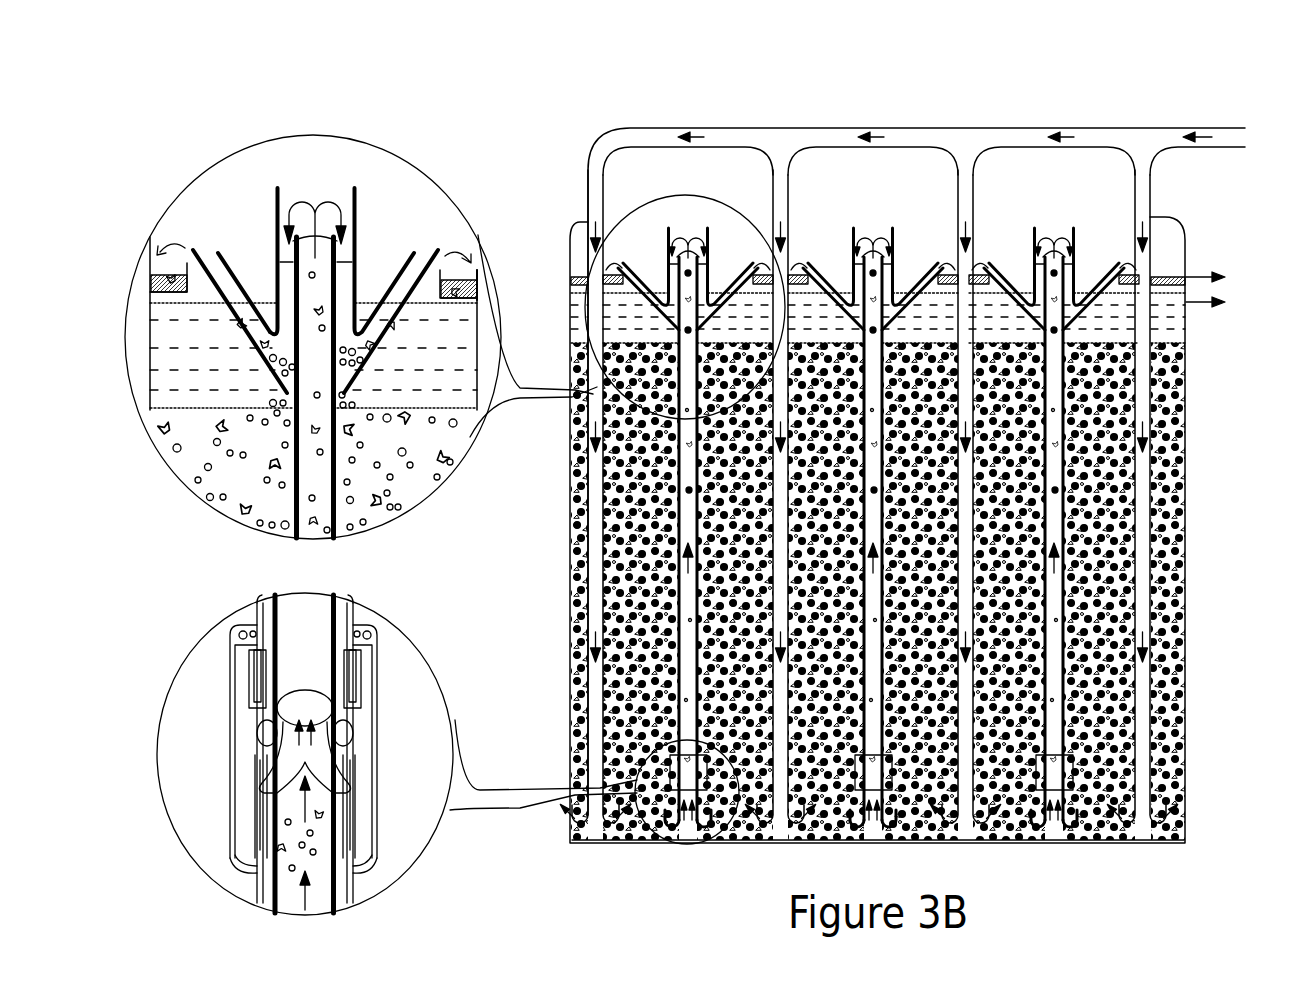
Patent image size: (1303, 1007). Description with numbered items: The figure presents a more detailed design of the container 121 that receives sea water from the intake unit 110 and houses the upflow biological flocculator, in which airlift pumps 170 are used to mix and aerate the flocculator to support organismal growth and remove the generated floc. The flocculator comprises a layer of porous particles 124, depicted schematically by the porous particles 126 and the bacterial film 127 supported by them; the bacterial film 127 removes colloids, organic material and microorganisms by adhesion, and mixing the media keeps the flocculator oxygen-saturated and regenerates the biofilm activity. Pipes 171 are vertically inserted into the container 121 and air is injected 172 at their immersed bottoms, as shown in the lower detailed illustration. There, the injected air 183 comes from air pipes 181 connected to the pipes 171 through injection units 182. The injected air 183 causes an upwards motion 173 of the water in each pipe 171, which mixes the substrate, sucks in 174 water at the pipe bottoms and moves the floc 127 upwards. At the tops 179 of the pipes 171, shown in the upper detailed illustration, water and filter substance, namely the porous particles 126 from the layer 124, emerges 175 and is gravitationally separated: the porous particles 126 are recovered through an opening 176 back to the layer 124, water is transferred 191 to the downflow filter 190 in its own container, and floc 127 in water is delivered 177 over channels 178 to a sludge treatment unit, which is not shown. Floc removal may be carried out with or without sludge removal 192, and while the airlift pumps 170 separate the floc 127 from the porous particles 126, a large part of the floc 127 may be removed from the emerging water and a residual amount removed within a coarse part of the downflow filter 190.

The container 121 is at (938, 88).
The tops of pipes 179 is at (245, 73).
The emerging of water and filter substance 175 is at (330, 203).
The bacterial film 127 is at (222, 253).
The porous particles 126 is at (273, 403).
The opening 176 is at (290, 397).
The delivery of floc 177 is at (460, 270).
The channels 178 is at (477, 280).
The airlift pumps 170 is at (677, 566).
The pipes 171 is at (1070, 495).
The upwards motion of water 173 is at (1065, 568).
The air injection 172 is at (165, 645).
The suction of water 174 is at (660, 843).
The air pipes 181 is at (342, 608).
The injection units 182 is at (365, 665).
The injected air 183 is at (327, 757).
The layer of porous particles 124 is at (314, 835).
The transfer of water 191 is at (1198, 322).
The sludge removal 192 is at (1198, 259).
The intake unit 110 is at (978, 118).
The downflow filter 190 is at (1238, 297).